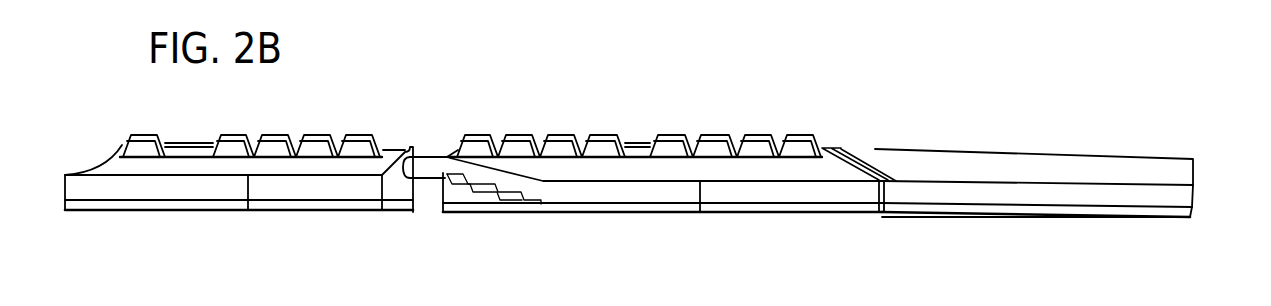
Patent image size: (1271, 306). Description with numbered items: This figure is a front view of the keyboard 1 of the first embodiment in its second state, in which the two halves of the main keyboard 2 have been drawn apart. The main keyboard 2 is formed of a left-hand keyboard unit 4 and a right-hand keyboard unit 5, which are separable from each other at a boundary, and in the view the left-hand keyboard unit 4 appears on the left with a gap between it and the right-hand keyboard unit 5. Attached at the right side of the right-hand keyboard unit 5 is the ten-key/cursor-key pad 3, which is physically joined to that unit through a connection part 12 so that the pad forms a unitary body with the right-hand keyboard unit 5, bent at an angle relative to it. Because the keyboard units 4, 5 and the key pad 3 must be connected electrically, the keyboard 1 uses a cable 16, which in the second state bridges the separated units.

The keyboard 1 is at (425, 127).
The main keyboard 2 is at (474, 220).
The ten-key/cursor-key pad 3 is at (978, 170).
The left-hand keyboard unit 4 is at (190, 194).
The right-hand keyboard unit 5 is at (648, 193).
The connection part 12 is at (850, 146).
The cable 16 is at (428, 168).